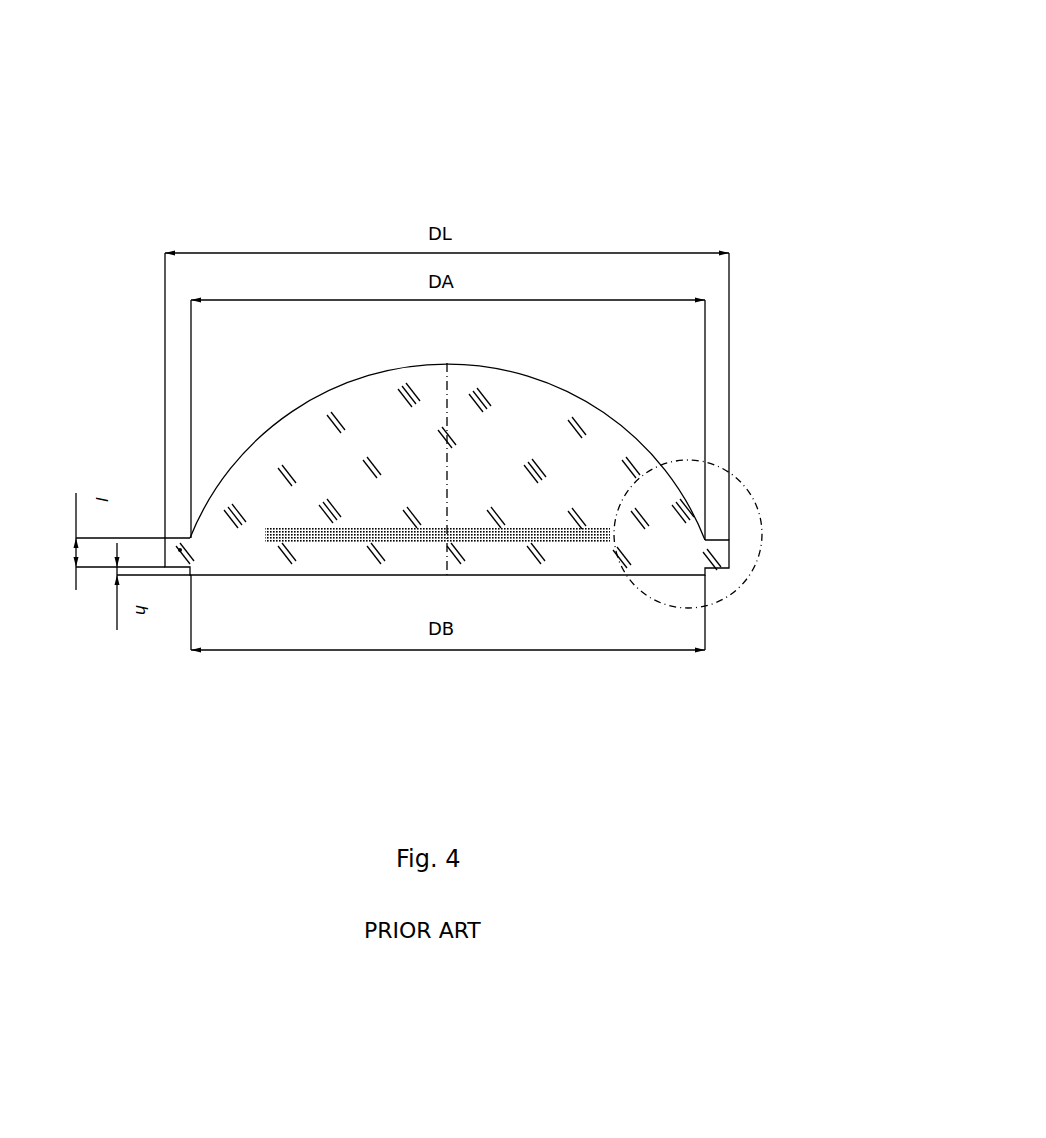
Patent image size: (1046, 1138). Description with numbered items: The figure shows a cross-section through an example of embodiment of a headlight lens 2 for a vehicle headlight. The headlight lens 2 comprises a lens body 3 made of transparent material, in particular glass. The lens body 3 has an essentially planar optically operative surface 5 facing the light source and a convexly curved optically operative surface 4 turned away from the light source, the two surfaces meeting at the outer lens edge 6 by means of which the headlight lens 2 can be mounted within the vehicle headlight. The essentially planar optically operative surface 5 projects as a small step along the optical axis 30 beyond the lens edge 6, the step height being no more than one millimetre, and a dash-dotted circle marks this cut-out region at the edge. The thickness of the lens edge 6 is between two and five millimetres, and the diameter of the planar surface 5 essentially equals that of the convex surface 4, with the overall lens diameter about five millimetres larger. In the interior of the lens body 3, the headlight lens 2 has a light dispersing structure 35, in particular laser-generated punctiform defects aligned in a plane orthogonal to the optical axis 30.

The headlight lens 2 is at (654, 128).
The lens body 3 is at (253, 494).
The convexly curved optically operative surface 4 is at (285, 423).
The essentially planar optically operative surface 5 is at (288, 575).
The lens edge 6 is at (180, 550).
The optical axis 30 is at (447, 485).
The light dispersing structure 35 is at (548, 534).